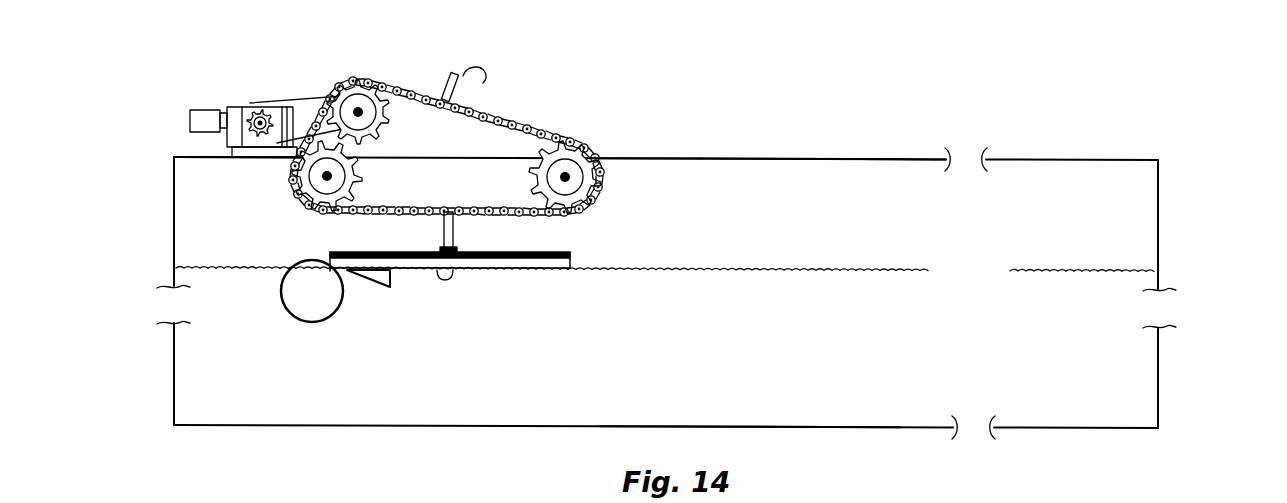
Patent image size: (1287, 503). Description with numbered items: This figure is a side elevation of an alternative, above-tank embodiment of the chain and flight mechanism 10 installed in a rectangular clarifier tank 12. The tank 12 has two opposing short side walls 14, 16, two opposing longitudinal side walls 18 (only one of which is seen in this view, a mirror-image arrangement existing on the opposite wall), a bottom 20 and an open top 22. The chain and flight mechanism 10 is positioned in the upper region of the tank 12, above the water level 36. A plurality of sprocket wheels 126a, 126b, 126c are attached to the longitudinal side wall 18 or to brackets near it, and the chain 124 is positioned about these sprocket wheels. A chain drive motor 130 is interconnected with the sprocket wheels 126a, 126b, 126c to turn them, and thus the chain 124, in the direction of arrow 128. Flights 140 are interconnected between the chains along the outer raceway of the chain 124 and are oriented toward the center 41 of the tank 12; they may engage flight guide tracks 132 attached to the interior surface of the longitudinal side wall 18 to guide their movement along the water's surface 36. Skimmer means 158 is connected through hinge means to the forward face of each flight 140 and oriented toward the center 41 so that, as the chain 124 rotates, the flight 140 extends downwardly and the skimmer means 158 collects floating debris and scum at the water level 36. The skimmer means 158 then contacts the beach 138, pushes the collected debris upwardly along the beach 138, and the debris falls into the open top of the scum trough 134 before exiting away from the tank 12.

The chain and flight mechanism 10 is at (537, 108).
The rectangular clarifier tank 12 is at (1103, 157).
The short side wall 14 is at (174, 235).
The short side wall 16 is at (1158, 238).
The longitudinal side wall 18 is at (800, 178).
The bottom 20 is at (328, 426).
The open top 22 is at (885, 185).
The water level 36 is at (700, 268).
The center of the tank 41 is at (773, 348).
The chain 124 is at (537, 125).
The sprocket wheel 126a is at (600, 158).
The sprocket wheel 126b is at (348, 78).
The sprocket wheel 126c is at (292, 188).
The arrow 128 is at (647, 143).
The chain drive motor 130 is at (233, 122).
The flight guide track 132 is at (528, 258).
The scum trough 134 is at (303, 322).
The beach 138 is at (365, 275).
The flight 140 is at (448, 88).
The skimmer means 158 is at (485, 70).